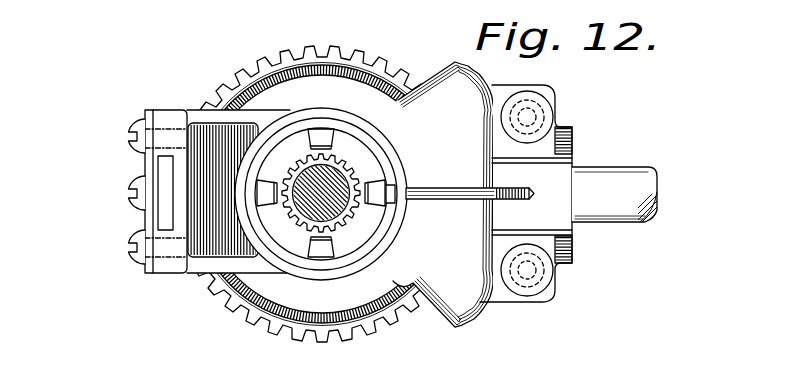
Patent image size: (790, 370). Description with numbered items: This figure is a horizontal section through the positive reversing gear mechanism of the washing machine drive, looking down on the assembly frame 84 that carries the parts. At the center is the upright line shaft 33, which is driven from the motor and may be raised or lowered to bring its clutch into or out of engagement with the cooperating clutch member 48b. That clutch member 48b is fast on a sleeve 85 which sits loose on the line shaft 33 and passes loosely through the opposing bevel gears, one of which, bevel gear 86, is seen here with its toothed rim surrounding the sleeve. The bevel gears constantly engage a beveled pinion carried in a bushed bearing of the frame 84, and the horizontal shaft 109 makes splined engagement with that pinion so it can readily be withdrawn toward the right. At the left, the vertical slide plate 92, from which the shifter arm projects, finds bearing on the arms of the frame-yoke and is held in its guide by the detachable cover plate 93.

The assembly frame 84 is at (472, 137).
The upright line shaft 33 is at (342, 167).
The detachable cover plate 93 is at (152, 165).
The vertical slide plate 92 is at (168, 202).
The sleeve 85 is at (338, 222).
The clutch member 48b is at (368, 217).
The bevel gear 86 is at (267, 328).
The horizontal shaft 109 is at (622, 166).